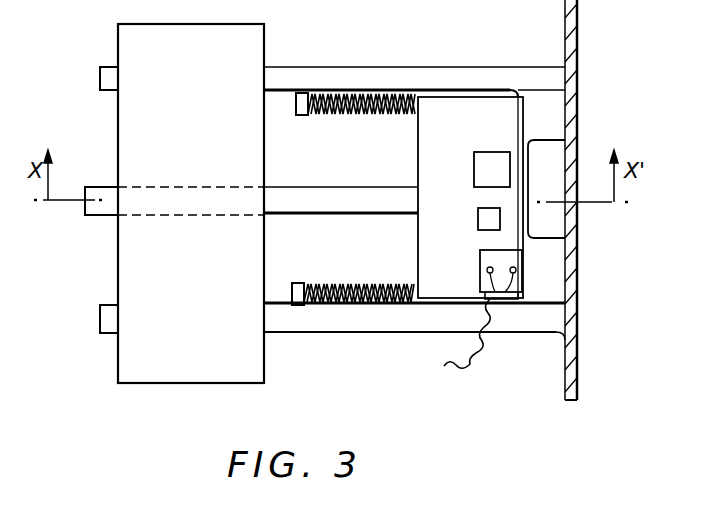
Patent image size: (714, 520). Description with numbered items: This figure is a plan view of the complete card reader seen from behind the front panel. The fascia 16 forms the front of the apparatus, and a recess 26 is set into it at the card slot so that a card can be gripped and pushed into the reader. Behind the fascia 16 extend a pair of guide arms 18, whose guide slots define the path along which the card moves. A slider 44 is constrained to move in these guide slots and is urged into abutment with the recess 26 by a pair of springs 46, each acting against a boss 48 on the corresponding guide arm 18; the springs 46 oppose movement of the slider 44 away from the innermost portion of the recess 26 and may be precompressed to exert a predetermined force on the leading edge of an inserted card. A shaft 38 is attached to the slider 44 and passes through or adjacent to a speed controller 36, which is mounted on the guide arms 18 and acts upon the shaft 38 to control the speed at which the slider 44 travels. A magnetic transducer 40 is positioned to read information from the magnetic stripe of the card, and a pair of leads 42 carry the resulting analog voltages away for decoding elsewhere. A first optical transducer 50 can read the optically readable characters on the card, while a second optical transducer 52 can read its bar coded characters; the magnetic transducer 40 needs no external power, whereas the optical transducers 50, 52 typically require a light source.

The fascia 16 is at (578, 20).
The guide arms 18 is at (402, 80).
The recess 26 is at (548, 222).
The speed controller 36 is at (203, 355).
The shaft 38 is at (110, 208).
The magnetic transducer 40 is at (480, 258).
The leads 42 is at (444, 366).
The slider 44 is at (429, 127).
The springs 46 is at (350, 116).
The bosses 48 is at (302, 94).
The first optical transducer 50 is at (478, 219).
The second optical transducer 52 is at (474, 168).